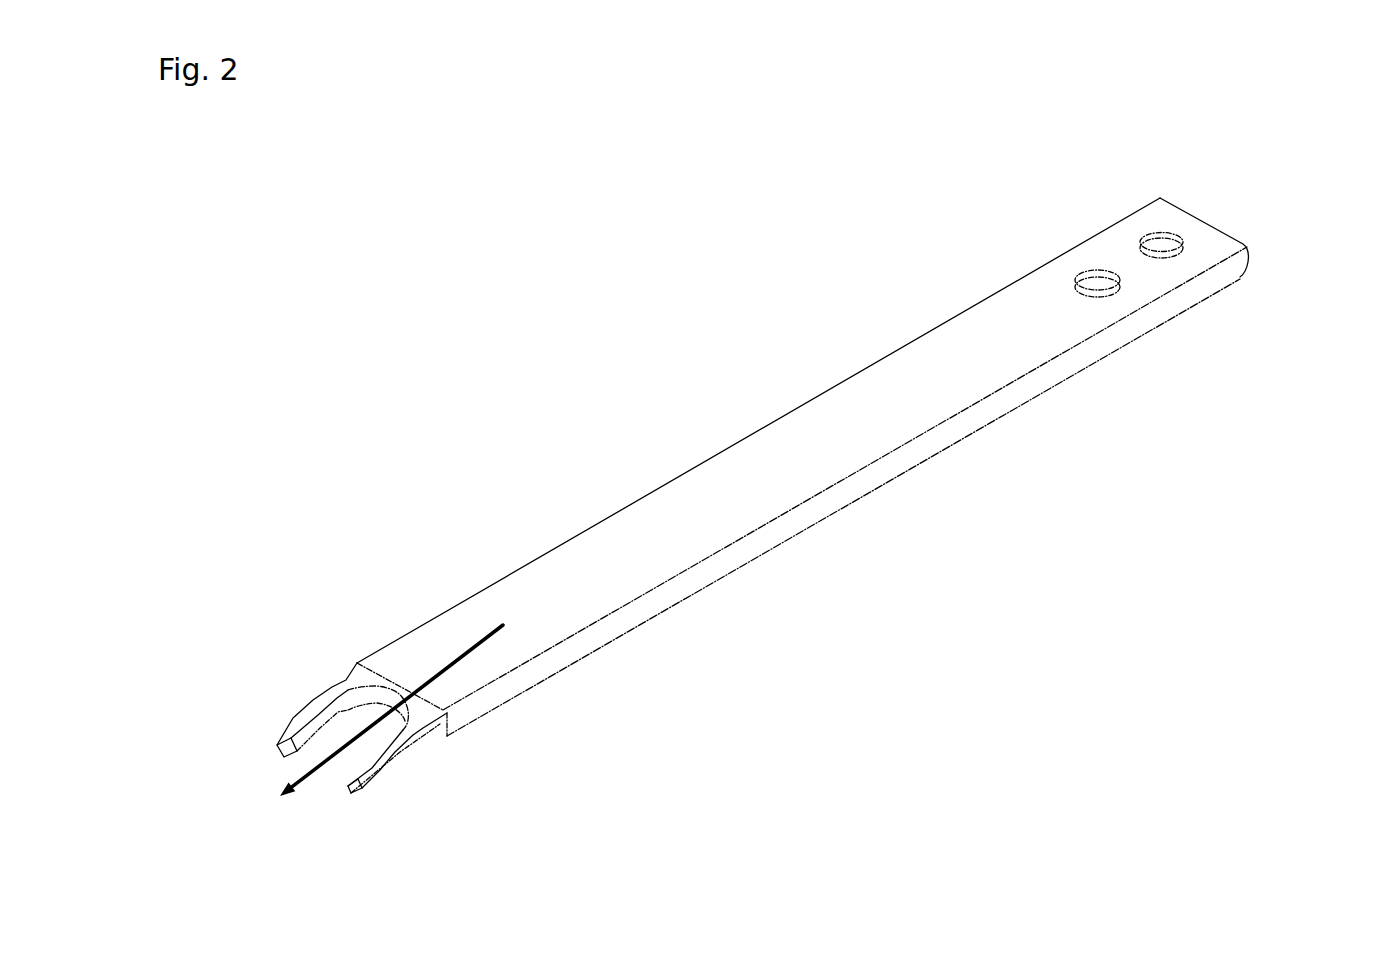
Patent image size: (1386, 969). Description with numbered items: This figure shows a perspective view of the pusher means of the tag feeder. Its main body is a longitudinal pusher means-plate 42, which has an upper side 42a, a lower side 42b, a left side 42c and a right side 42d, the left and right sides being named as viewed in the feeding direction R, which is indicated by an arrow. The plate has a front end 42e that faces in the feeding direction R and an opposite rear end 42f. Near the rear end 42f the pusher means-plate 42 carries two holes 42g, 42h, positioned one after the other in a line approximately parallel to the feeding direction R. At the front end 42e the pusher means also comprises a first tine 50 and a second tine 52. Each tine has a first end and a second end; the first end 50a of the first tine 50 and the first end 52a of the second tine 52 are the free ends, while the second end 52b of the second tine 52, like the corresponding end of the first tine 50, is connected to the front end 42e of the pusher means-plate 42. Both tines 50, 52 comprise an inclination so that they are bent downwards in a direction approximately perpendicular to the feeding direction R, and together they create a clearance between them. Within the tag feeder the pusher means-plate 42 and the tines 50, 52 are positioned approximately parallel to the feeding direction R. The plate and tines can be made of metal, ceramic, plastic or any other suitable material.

The pusher means-plate 42 is at (846, 409).
The upper side 42a is at (908, 413).
The lower side 42b is at (843, 507).
The left side 42c is at (610, 623).
The right side 42d is at (758, 430).
The front end 42e is at (400, 655).
The rear end 42f is at (1217, 252).
The hole 42g is at (1099, 283).
The hole 42h is at (1162, 245).
The first tine 50 is at (358, 718).
The first end 50a is at (387, 752).
The second tine 52 is at (358, 669).
The first end 52a is at (298, 736).
The second end 52b is at (353, 688).
The feeding direction R is at (380, 727).